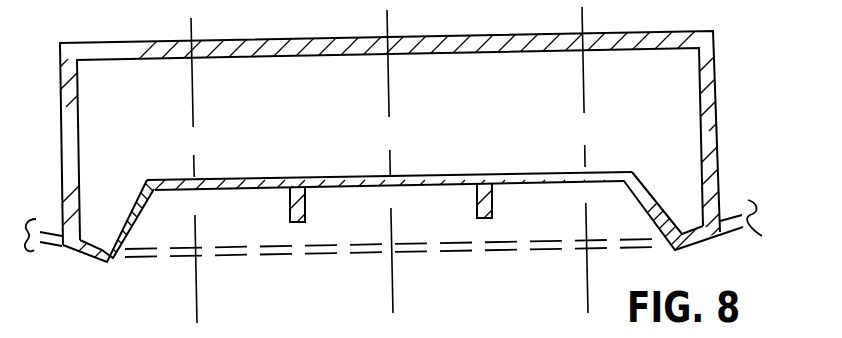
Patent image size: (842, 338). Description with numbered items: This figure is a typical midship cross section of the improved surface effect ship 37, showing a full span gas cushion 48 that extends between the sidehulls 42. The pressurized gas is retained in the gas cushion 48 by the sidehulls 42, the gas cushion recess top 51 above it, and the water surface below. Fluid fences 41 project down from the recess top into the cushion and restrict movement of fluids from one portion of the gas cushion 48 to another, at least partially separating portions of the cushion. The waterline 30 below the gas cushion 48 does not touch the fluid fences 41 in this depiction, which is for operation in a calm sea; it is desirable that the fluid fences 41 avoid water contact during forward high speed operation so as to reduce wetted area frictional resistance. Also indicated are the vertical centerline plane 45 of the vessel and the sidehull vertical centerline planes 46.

The waterline 30 is at (415, 256).
The improved surface effect ship 37 is at (717, 80).
The fluid fences 41 is at (305, 200).
The sidehulls 42 is at (88, 261).
The vertical centerline plane 45 is at (392, 168).
The sidehull vertical centerline planes 46 is at (587, 97).
The gas cushion 48 is at (446, 221).
The gas cushion recess top 51 is at (527, 187).